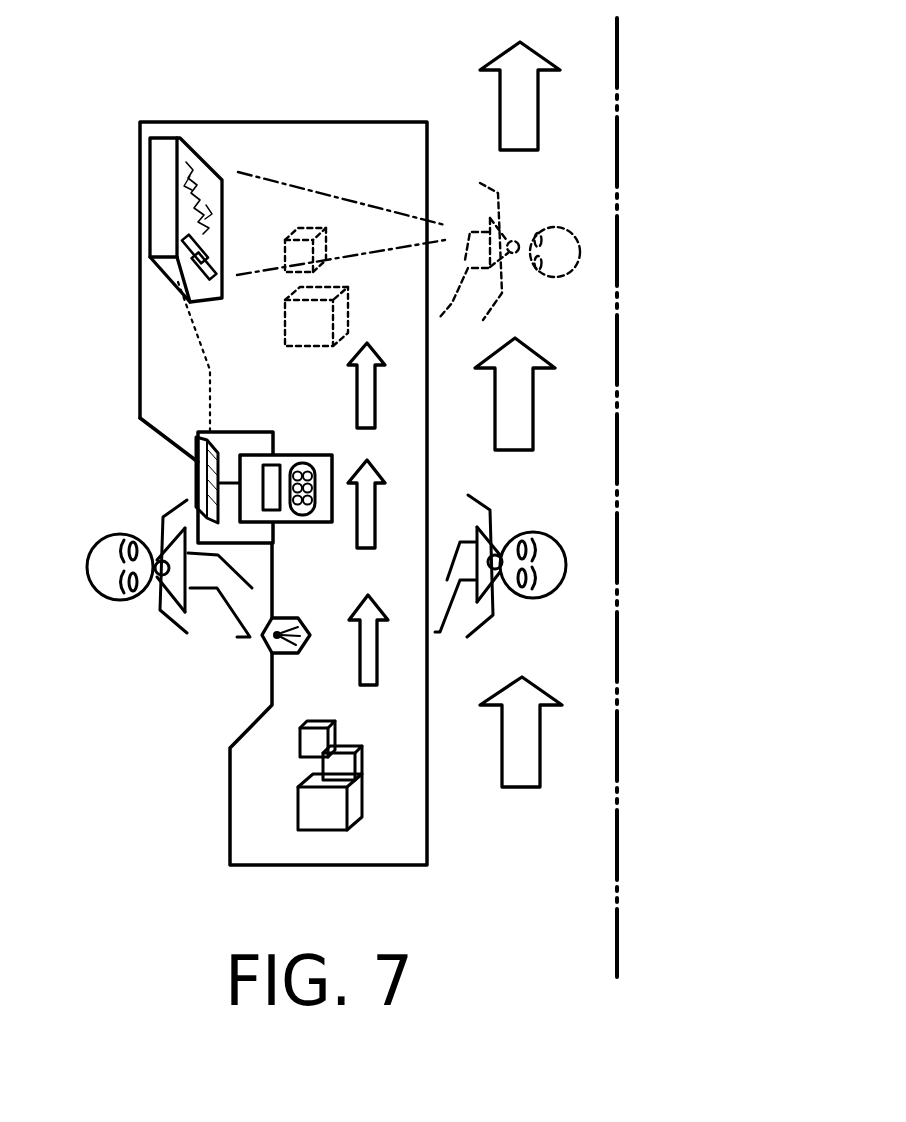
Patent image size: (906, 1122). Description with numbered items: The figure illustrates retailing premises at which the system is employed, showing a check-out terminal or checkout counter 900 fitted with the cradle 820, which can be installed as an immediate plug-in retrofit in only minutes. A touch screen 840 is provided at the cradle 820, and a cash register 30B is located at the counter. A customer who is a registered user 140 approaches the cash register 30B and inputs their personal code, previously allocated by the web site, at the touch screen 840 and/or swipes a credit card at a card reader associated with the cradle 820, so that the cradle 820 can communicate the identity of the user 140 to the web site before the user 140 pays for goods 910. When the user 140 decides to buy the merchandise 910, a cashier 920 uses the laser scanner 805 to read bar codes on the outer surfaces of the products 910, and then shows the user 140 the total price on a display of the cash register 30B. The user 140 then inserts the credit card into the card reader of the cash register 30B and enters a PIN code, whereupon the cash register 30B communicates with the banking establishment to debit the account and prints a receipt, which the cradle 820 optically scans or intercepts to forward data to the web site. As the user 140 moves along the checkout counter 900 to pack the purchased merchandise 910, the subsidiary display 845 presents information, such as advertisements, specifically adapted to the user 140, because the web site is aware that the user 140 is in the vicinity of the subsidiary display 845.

The check-out terminal 900 is at (308, 70).
The subsidiary display 845 is at (160, 161).
The cradle 820 is at (233, 440).
The touch screen 840 is at (198, 462).
The cash register 30B is at (320, 460).
The cashier 920 is at (135, 632).
The user 140 is at (552, 520).
The laser scanner 805 is at (283, 653).
The merchandise 910 is at (328, 802).